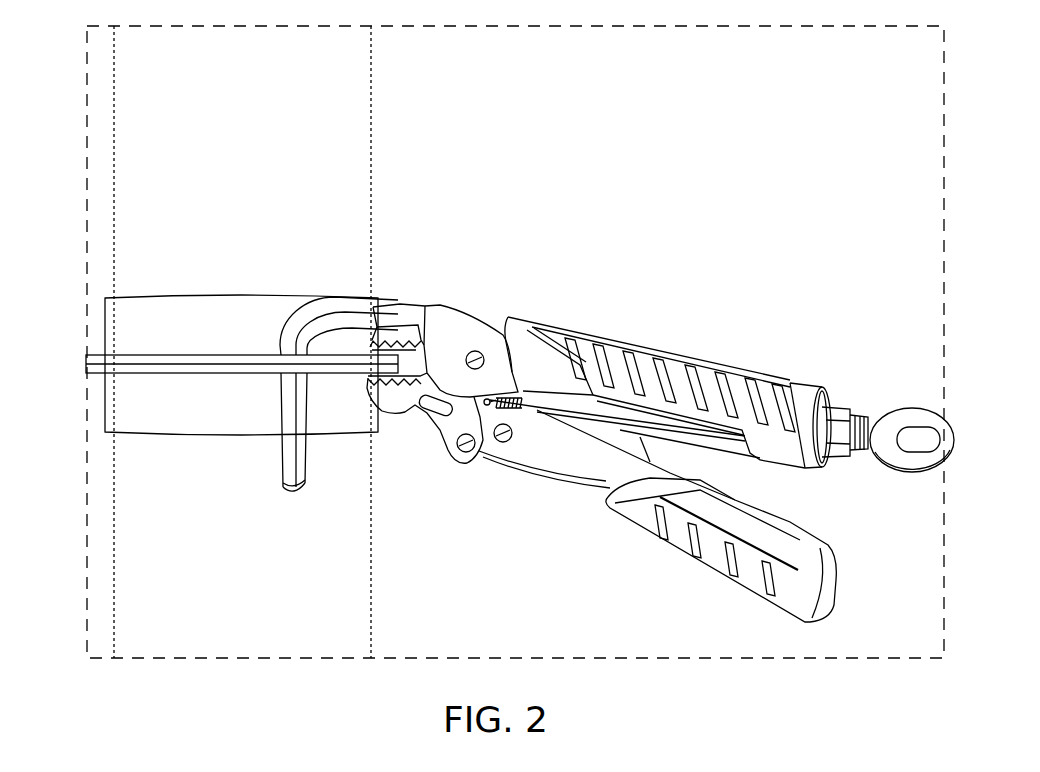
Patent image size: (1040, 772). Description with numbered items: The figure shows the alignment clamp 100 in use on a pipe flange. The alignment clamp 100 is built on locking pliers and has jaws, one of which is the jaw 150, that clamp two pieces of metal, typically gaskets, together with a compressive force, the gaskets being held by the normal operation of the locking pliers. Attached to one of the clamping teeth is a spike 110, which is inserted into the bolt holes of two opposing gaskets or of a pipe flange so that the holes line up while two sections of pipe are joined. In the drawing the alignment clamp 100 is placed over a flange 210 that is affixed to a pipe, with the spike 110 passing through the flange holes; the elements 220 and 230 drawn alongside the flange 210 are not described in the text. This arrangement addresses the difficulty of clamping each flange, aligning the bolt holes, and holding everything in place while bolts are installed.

The alignment clamp 100 is at (745, 412).
The spike 110 is at (303, 443).
The jaw 150 is at (924, 440).
The flange 210 is at (362, 107).
The rod 220 is at (125, 356).
The mount body 230 is at (165, 366).